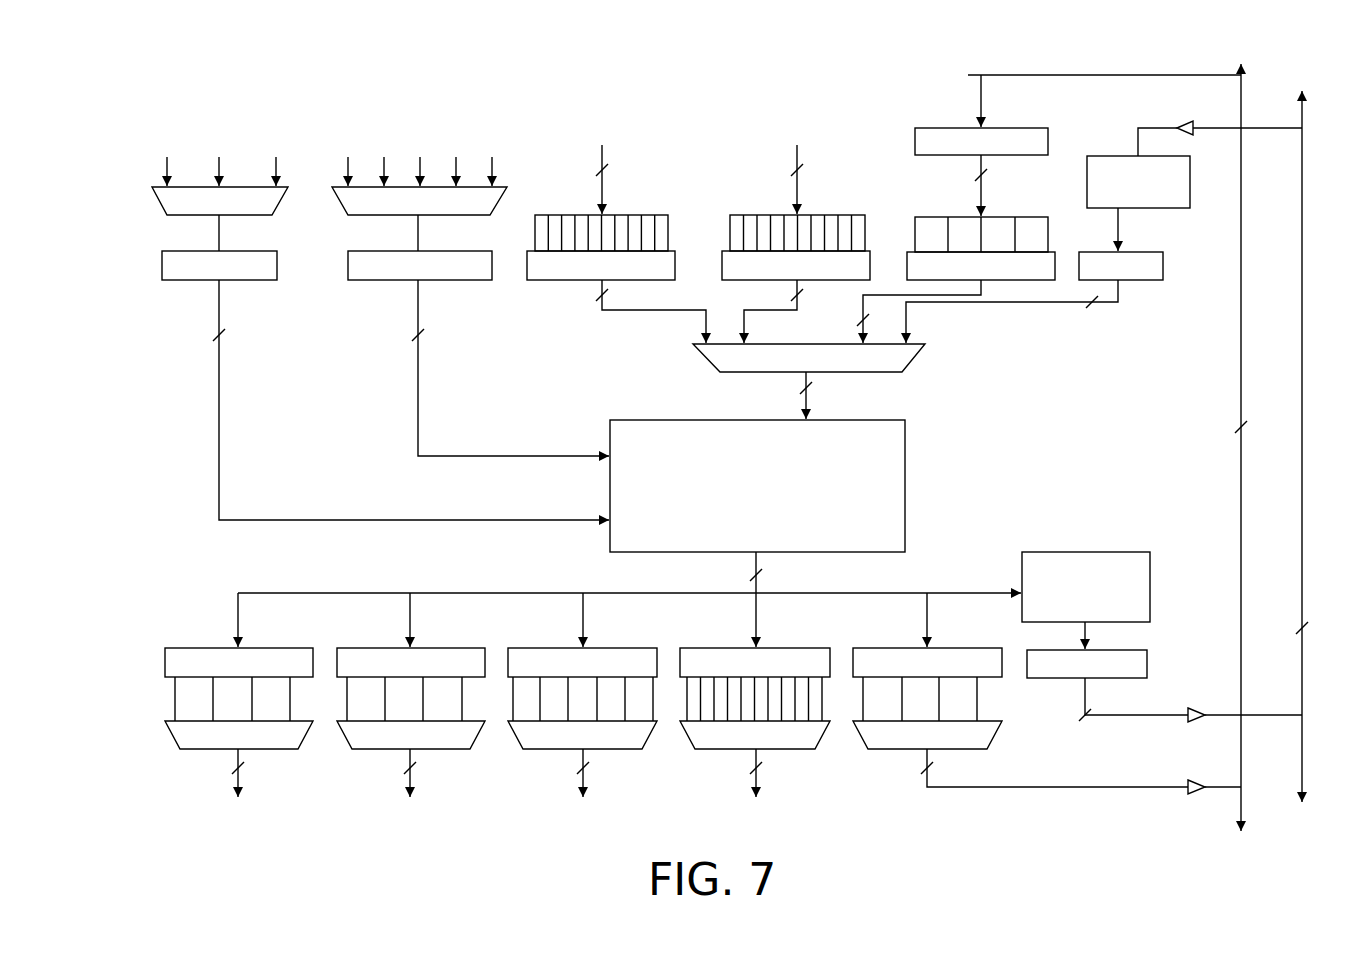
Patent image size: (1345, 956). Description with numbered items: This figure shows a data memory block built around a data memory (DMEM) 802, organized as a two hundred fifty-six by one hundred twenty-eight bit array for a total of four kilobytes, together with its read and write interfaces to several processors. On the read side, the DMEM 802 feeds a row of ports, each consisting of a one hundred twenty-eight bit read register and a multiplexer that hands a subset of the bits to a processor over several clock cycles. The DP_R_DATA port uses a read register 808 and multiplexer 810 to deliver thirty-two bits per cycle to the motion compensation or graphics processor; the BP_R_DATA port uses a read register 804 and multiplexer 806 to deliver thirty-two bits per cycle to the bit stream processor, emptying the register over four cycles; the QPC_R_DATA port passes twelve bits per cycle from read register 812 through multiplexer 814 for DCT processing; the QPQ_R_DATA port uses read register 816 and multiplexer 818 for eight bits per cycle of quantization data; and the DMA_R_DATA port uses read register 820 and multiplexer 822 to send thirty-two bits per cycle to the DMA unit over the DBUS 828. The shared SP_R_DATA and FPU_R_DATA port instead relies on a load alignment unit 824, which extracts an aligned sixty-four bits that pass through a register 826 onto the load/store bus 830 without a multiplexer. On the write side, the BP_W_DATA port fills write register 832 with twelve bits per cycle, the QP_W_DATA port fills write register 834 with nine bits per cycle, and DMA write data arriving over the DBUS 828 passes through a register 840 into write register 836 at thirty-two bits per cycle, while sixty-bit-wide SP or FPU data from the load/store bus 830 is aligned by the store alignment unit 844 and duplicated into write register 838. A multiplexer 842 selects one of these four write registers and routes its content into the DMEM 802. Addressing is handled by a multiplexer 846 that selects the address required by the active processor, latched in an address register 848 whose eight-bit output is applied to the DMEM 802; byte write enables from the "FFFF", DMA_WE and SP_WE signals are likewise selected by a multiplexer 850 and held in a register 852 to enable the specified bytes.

The data memory (DMEM) 802 is at (629, 533).
The read register 804 is at (411, 684).
The multiplexer 806 is at (411, 774).
The read register 808 is at (239, 684).
The multiplexer 810 is at (239, 774).
The read register 812 is at (582, 684).
The multiplexer 814 is at (582, 774).
The read register 816 is at (755, 684).
The multiplexer 818 is at (755, 774).
The read register 820 is at (927, 684).
The multiplexer 822 is at (1047, 774).
The load alignment unit 824 is at (1086, 600).
The read register 826 is at (1164, 686).
The DBUS 828 is at (1249, 447).
The load/store bus 830 is at (1309, 446).
The write register 832 is at (616, 231).
The write register 834 is at (796, 231).
The write register 836 is at (938, 280).
The write register 838 is at (1034, 297).
The DMA write data register 840 is at (1078, 131).
The multiplexer 842 is at (809, 381).
The store alignment unit 844 is at (1087, 196).
The multiplexer 846 is at (419, 158).
The address register 848 is at (478, 353).
The write enable multiplexer 850 is at (211, 163).
The write enable register 852 is at (385, 385).